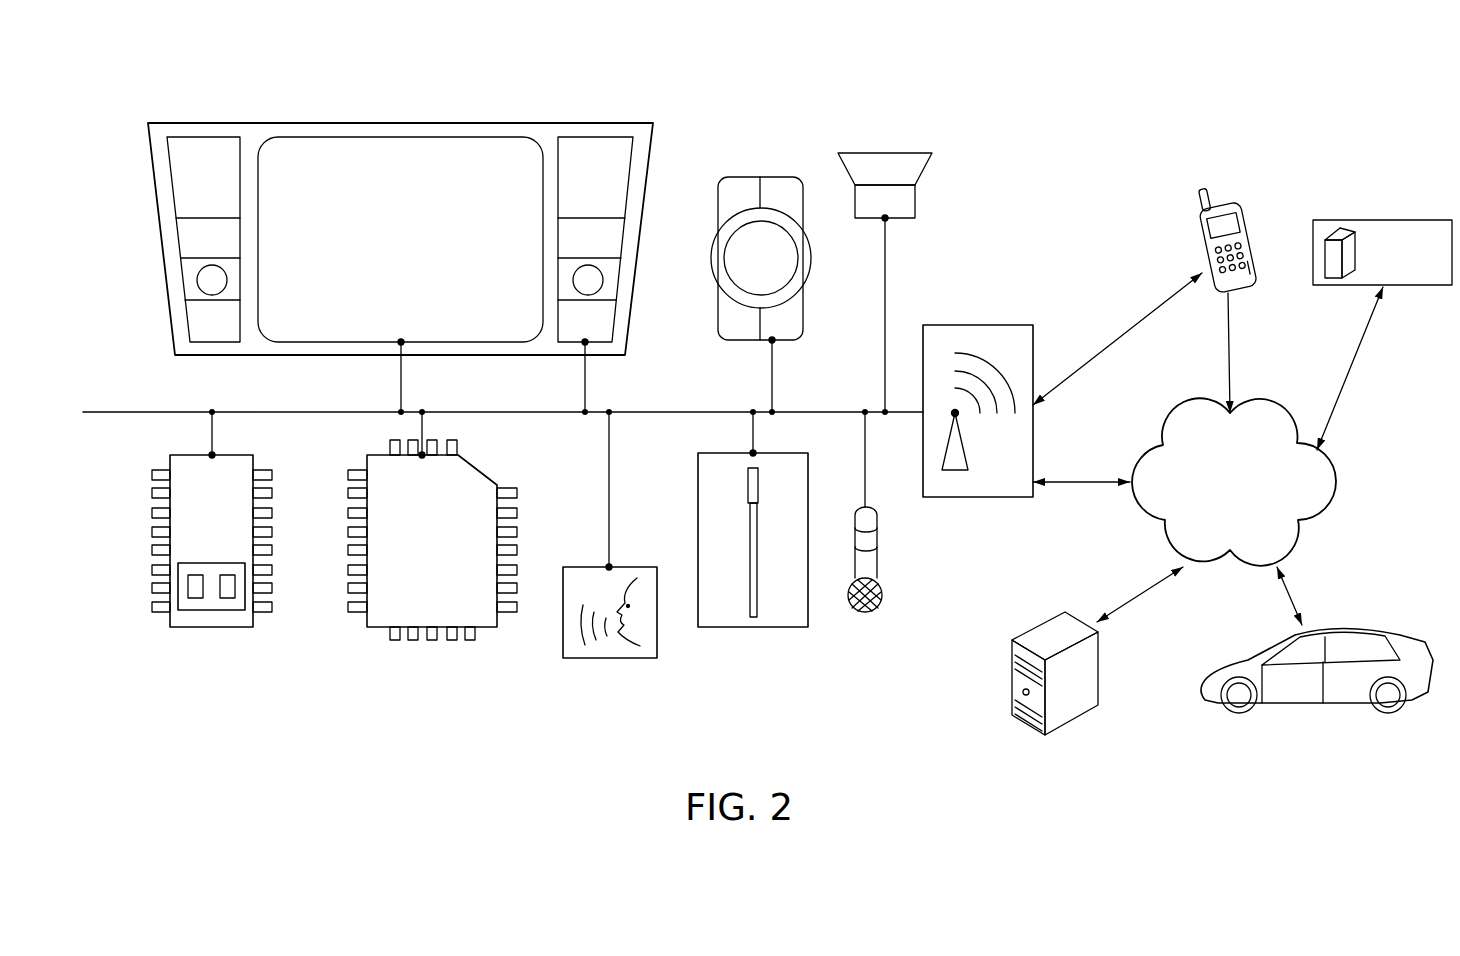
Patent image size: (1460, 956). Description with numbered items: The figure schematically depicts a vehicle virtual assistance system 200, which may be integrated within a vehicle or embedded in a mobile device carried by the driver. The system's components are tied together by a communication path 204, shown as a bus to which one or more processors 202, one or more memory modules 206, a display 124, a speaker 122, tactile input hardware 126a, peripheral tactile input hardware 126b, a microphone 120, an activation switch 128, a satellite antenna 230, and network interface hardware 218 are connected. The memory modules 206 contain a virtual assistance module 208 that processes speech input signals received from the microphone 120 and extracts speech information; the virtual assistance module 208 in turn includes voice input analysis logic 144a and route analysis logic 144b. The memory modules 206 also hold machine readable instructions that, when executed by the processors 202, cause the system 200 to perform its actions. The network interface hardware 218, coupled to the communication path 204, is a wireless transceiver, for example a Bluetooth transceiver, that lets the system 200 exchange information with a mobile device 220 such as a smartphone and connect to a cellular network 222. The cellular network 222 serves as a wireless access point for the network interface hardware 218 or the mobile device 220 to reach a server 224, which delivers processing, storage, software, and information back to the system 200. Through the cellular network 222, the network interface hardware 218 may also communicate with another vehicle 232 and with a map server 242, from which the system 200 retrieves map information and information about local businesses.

The vehicle virtual assistance system 200 is at (1214, 97).
The display 124 is at (403, 150).
The tactile input hardware 126a is at (227, 280).
The peripheral tactile input hardware 126b is at (743, 177).
The speaker 122 is at (903, 152).
The network interface hardware 218 is at (978, 325).
The mobile device 220 is at (1238, 207).
The map server 242 is at (1357, 258).
The cellular network 222 is at (1268, 402).
The server 224 is at (1042, 623).
The another vehicle 232 is at (1310, 705).
The microphone 120 is at (877, 543).
The satellite antenna 230 is at (753, 627).
The activation switch 128 is at (590, 658).
The communication path 204 is at (120, 413).
The memory modules 206 is at (175, 546).
The virtual assistance module 208 is at (172, 593).
The voice input analysis logic 144a is at (188, 582).
The route analysis logic 144b is at (228, 575).
The processors 202 is at (377, 627).